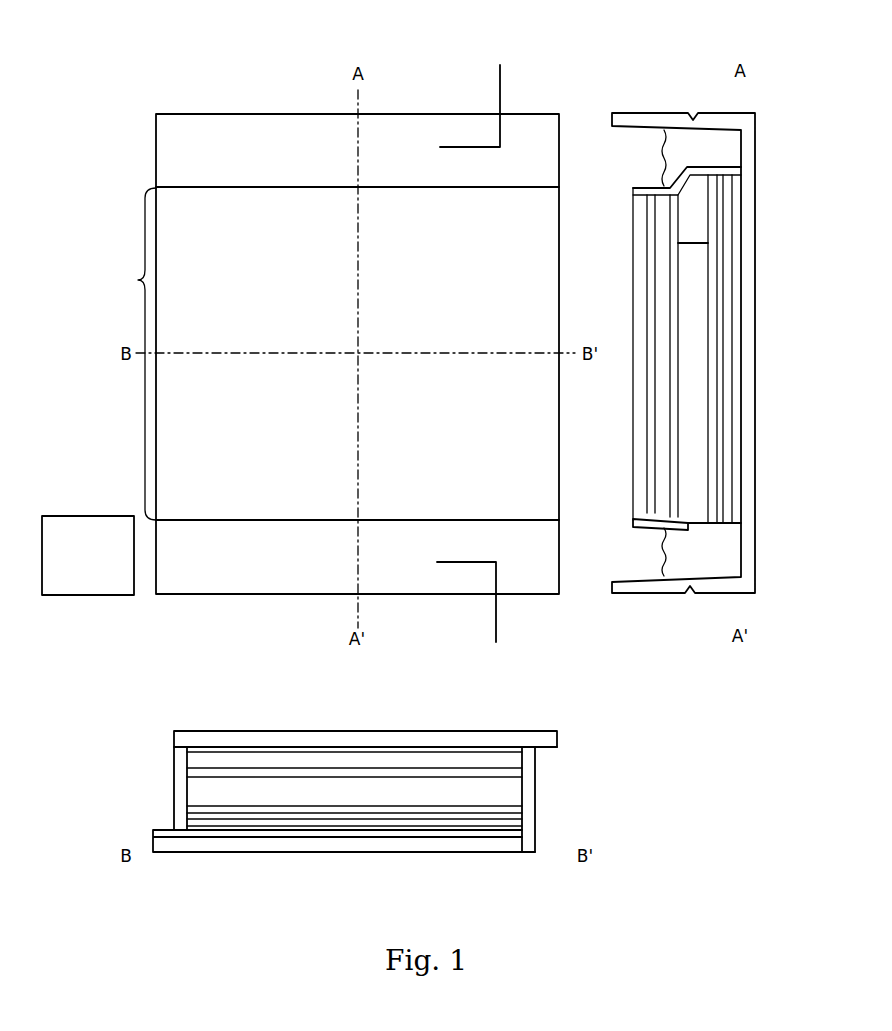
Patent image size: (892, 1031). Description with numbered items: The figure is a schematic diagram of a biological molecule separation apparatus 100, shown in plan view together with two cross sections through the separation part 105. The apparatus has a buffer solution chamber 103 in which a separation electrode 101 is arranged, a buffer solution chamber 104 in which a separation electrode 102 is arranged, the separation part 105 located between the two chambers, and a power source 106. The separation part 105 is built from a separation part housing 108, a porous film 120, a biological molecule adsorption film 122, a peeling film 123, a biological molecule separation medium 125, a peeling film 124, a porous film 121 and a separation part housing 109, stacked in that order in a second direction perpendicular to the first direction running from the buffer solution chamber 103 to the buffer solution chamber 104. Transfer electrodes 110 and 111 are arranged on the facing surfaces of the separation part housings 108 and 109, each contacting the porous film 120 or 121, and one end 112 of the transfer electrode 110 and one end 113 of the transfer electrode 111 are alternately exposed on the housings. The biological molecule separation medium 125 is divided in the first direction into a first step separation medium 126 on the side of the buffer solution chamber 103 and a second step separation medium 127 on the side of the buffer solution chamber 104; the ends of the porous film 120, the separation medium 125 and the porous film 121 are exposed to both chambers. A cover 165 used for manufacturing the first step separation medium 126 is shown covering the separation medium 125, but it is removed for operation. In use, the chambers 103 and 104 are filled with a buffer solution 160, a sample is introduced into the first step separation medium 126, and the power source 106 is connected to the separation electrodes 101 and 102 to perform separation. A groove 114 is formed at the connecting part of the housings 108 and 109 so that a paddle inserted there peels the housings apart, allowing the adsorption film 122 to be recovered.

The biological molecule separation apparatus 100 is at (160, 74).
The separation electrode 101 is at (502, 98).
The separation electrode 102 is at (498, 613).
The buffer solution chamber 103 is at (262, 132).
The buffer solution chamber 104 is at (262, 579).
The separation part 105 is at (130, 354).
The power source 106 is at (88, 516).
The separation part housing 108 is at (673, 111).
The separation part housing 109 is at (636, 223).
The transfer electrode 110 is at (738, 304).
The transfer electrode 111 is at (650, 250).
The one end of the transfer electrode 110 112 is at (164, 831).
The one end of the transfer electrode 111 113 is at (545, 756).
The groove 114 is at (690, 595).
The porous film 120 is at (728, 329).
The porous film 121 is at (660, 278).
The biological molecule adsorption film 122 is at (718, 358).
The peeling film 123 is at (712, 385).
The peeling film 124 is at (673, 306).
The biological molecule separation medium 125 is at (195, 793).
The first step separation medium 126 is at (695, 223).
The second step separation medium 127 is at (690, 449).
The buffer solution 160 is at (745, 149).
The cover 165 is at (633, 192).